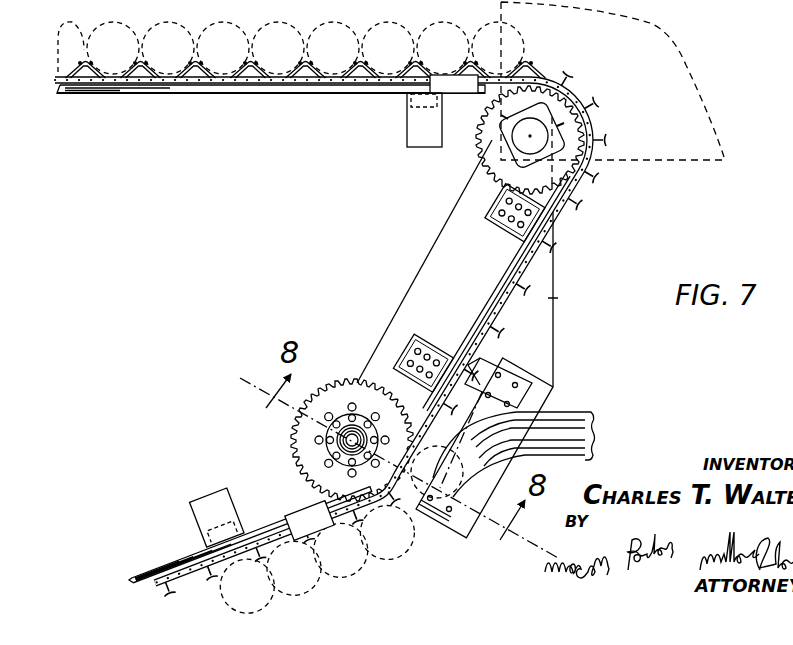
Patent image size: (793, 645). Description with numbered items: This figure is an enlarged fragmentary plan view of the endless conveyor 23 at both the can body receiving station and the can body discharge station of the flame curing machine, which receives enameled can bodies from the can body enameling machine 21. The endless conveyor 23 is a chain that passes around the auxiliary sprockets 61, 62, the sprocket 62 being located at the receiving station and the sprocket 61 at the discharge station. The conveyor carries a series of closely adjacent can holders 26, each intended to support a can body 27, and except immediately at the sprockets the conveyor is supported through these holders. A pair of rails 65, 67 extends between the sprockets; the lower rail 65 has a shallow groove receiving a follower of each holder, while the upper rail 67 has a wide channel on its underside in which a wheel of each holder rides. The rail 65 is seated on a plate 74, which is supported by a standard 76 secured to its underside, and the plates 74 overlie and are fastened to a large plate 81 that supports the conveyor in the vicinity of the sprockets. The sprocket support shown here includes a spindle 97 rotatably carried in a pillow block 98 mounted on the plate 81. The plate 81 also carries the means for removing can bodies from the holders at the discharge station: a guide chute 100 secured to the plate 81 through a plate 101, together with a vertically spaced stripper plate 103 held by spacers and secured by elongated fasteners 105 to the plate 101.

The can body enameling machine 21 is at (623, 140).
The endless conveyor 23 is at (318, 87).
The can holder 26 is at (67, 70).
The can body 27 is at (185, 30).
The auxiliary sprocket 61 is at (334, 384).
The auxiliary sprocket 62 is at (492, 173).
The rail 65 is at (249, 90).
The rail 67 is at (463, 92).
The plate 74 is at (407, 136).
The standard 76 is at (411, 106).
The large plate 81 is at (556, 298).
The spindle 97 is at (526, 146).
The pillow block 98 is at (549, 109).
The guide chute 100 is at (569, 411).
The plate 101 is at (500, 366).
The stripper plate 103 is at (480, 359).
The elongated fastener 105 is at (549, 378).